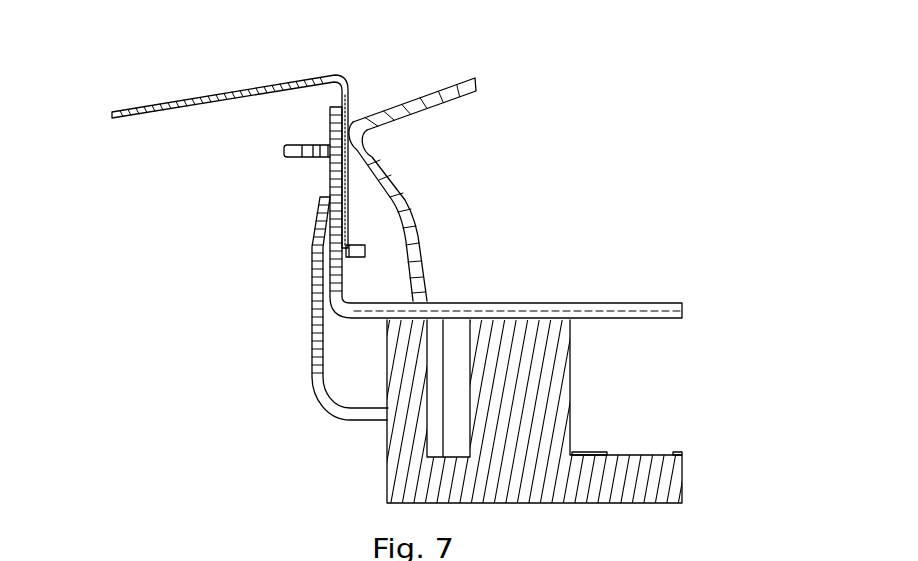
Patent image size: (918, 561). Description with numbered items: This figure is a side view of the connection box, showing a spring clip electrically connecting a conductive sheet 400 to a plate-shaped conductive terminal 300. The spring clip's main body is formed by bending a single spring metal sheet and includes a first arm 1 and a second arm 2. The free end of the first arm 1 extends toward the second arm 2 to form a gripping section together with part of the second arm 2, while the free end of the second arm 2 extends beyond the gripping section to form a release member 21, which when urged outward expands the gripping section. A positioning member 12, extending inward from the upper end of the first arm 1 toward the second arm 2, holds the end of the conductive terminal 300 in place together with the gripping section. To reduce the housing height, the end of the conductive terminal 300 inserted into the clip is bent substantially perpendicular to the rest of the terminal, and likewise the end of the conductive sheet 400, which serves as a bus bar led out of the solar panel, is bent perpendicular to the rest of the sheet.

The conductive sheet 400 is at (187, 100).
The release member 21 is at (432, 97).
The second arm 2 is at (420, 250).
The positioning member 12 is at (355, 250).
The conductive terminal 300 is at (330, 160).
The first arm 1 is at (313, 303).